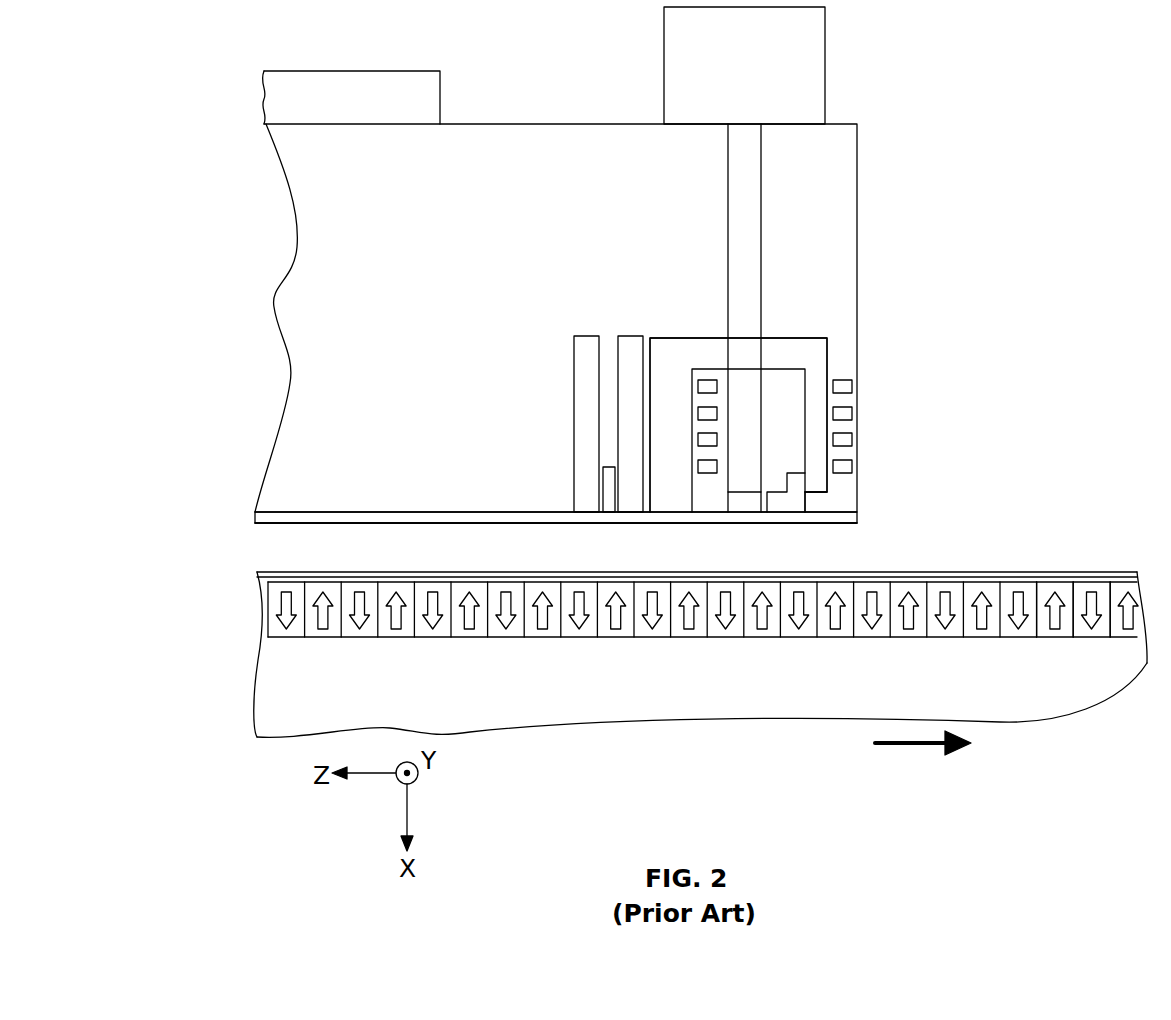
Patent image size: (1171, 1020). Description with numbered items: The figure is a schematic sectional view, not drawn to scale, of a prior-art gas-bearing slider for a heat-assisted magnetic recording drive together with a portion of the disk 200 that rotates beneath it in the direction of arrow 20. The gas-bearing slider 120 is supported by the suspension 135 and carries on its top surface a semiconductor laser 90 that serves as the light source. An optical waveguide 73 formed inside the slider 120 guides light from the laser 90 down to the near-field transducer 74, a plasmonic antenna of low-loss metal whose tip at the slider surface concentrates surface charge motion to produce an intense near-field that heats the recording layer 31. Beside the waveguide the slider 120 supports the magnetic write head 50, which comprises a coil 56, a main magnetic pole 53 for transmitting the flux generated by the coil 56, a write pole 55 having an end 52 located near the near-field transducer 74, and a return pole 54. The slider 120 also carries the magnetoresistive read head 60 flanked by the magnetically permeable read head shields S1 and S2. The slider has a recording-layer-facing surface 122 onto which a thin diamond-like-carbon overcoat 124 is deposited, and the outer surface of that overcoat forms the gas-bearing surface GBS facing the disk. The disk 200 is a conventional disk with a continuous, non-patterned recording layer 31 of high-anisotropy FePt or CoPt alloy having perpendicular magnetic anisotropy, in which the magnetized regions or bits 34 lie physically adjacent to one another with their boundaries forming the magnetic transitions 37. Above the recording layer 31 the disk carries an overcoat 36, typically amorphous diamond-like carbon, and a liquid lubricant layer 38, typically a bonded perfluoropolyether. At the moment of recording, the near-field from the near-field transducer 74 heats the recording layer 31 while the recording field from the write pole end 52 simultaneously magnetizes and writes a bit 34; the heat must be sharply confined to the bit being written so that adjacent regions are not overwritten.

The arrow 20 is at (910, 748).
The recording layer 31 is at (240, 585).
The bits 34 is at (1092, 595).
The overcoat 36 is at (1028, 583).
The magnetic transitions 37 is at (1033, 638).
The liquid lubricant layer 38 is at (960, 572).
The write head 50 is at (667, 268).
The write pole end 52 is at (773, 492).
The main magnetic pole 53 is at (818, 362).
The return pole 54 is at (667, 355).
The write pole 55 is at (797, 503).
The coil 56 is at (690, 372).
The magnetoresistive read head 60 is at (600, 497).
The optical waveguide 73 is at (745, 272).
The near-field transducer 74 is at (742, 492).
The semiconductor laser 90 is at (812, 64).
The gas-bearing slider 120 is at (302, 400).
The recording-layer-facing surface 122 is at (375, 512).
The overcoat 124 is at (410, 523).
The suspension 135 is at (432, 78).
The magnetic recording disk 200 is at (1018, 706).
The read head shield S1 is at (587, 423).
The read head shield S2 is at (630, 334).
The gas-bearing surface GBS is at (837, 520).